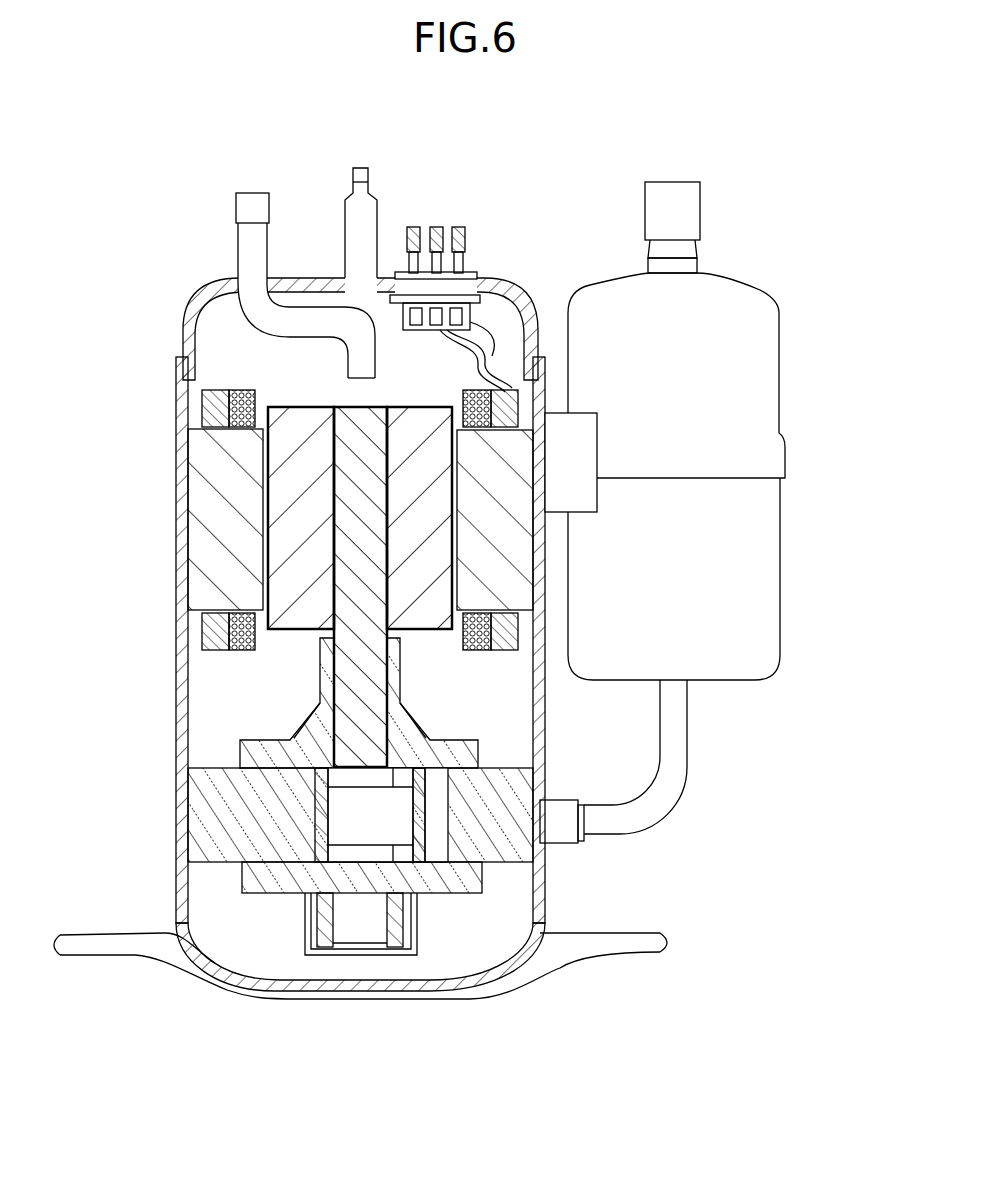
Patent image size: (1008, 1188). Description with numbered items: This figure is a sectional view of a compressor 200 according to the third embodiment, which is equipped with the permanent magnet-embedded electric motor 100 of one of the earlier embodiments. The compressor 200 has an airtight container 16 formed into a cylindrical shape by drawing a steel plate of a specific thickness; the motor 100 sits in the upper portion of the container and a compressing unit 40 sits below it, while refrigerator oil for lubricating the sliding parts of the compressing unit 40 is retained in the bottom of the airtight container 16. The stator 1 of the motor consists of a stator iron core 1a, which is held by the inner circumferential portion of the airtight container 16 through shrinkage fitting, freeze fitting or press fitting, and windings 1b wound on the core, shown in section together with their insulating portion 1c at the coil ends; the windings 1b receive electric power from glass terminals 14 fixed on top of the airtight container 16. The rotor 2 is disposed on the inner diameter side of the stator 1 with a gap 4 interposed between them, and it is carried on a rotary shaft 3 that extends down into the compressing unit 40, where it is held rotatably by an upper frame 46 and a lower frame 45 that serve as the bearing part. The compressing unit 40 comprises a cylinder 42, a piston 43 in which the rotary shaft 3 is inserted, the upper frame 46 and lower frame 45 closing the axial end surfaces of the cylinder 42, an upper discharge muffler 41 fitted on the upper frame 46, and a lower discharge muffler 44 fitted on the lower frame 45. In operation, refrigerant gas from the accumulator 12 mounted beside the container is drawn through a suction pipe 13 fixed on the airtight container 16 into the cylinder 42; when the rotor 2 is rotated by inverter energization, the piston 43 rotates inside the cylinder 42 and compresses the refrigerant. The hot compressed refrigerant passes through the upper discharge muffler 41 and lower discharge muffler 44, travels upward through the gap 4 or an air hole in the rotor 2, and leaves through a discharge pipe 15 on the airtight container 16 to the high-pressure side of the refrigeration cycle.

The compressor 200 is at (799, 132).
The permanent magnet-embedded electric motor 100 is at (683, 483).
The stator 1 is at (648, 567).
The stator iron core 1a is at (500, 587).
The windings 1b is at (517, 638).
The insulator 1c is at (517, 618).
The rotor 2 is at (403, 557).
The rotary shaft 3 is at (373, 535).
The gap 4 is at (453, 498).
The accumulator 12 is at (780, 405).
The suction pipe 13 is at (670, 802).
The glass terminals 14 is at (440, 228).
The discharge pipe 15 is at (238, 250).
The airtight container 16 is at (188, 312).
The compressing unit 40 is at (218, 894).
The upper discharge muffler 41 is at (303, 723).
The cylinder 42 is at (208, 768).
The piston 43 is at (320, 818).
The lower discharge muffler 44 is at (305, 917).
The lower frame 45 is at (437, 882).
The upper frame 46 is at (482, 745).